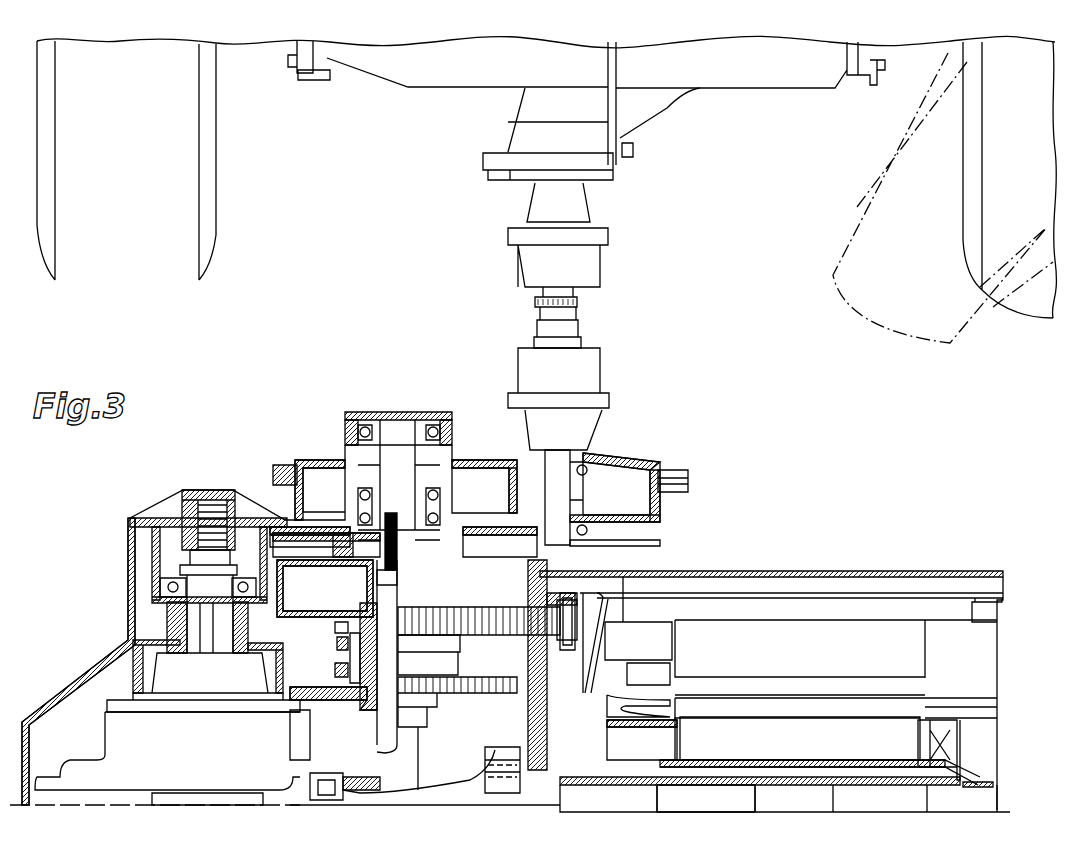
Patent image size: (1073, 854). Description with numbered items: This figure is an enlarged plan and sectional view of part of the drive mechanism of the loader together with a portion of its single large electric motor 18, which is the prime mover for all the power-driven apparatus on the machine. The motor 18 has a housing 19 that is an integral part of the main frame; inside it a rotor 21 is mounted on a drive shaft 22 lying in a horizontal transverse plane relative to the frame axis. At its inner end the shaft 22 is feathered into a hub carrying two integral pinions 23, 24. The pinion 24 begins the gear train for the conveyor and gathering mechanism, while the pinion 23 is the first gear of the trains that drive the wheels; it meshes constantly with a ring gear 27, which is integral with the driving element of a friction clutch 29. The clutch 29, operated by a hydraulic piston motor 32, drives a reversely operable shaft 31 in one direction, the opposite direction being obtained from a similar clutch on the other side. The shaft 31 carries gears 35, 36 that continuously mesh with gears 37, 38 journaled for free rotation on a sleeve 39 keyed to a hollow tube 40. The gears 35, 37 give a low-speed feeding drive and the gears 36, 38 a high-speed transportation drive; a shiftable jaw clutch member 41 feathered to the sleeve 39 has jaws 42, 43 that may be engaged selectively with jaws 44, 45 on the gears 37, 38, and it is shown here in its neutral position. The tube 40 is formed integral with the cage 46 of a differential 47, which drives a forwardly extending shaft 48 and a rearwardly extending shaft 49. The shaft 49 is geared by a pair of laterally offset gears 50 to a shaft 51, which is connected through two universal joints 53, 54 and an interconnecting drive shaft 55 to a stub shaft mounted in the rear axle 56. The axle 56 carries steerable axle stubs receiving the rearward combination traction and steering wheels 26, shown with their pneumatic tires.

The electric motor 18 is at (872, 566).
The housing 19 is at (752, 571).
The rotor 21 is at (797, 738).
The drive shaft 22 is at (718, 793).
The pinion 23 is at (355, 793).
The pinion 24 is at (500, 750).
The rearward combination traction and steering wheels 26 is at (546, 192).
The ring gear 27 is at (360, 777).
The friction clutch 29 is at (98, 733).
The reversely operable shaft 31 is at (192, 630).
The piston motor 32 is at (205, 506).
The gear 35 is at (168, 613).
The gear 36 is at (118, 678).
The gear 37 is at (482, 620).
The gear 38 is at (480, 690).
The sleeve 39 is at (370, 650).
The hollow tube 40 is at (385, 612).
The jaw clutch member 41 is at (340, 651).
The jaws 42 is at (338, 632).
The jaws 43 is at (336, 680).
The jaws 44 is at (340, 620).
The jaws 45 is at (345, 699).
The cage 46 is at (372, 543).
The differential 47 is at (320, 527).
The forwardly extending shaft 48 is at (392, 578).
The rearwardly extending shaft 49 is at (397, 463).
The laterally offset gears 50 is at (510, 462).
The shaft 51 is at (555, 515).
The universal joint 53 is at (580, 372).
The universal joint 54 is at (586, 258).
The interconnecting drive shaft 55 is at (567, 292).
The rear axle 56 is at (432, 80).